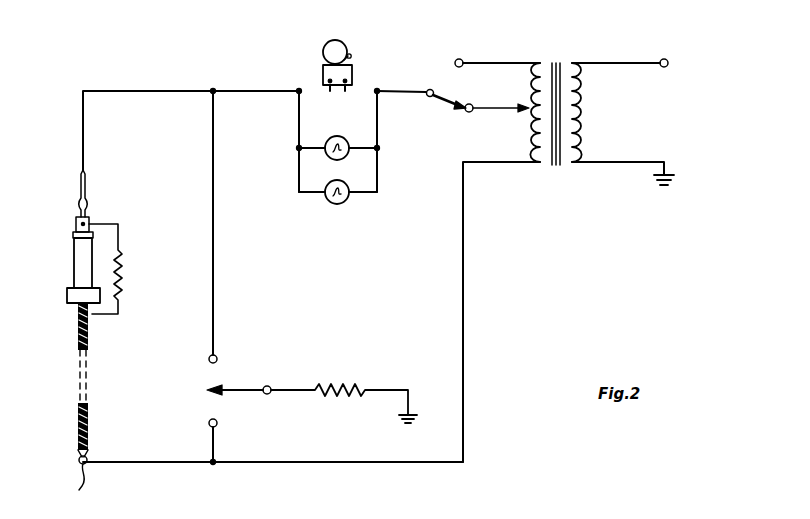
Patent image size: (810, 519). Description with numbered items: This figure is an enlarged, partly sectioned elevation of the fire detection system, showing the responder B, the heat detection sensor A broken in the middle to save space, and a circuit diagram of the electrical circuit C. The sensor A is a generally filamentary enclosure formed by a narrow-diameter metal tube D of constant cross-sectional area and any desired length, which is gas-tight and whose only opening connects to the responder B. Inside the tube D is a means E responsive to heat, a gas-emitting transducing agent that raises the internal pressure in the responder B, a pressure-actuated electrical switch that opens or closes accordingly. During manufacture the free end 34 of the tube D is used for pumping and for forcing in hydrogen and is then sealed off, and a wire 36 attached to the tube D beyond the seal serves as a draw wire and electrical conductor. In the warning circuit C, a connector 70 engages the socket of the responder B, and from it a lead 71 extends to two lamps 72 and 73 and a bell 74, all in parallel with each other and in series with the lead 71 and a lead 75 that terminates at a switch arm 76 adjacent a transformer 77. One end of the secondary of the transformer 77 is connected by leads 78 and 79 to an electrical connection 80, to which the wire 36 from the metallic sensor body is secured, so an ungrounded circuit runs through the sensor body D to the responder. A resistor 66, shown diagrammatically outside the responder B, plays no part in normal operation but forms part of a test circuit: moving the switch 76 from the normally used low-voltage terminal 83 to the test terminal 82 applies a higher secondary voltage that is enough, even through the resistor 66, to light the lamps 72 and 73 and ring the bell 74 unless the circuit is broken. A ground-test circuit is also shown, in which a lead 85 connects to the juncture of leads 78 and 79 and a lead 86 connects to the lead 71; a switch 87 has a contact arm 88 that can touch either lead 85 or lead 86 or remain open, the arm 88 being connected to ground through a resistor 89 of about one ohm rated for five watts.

The free end of tube 34 is at (76, 448).
The draw wire 36 is at (74, 460).
The resistor 66 is at (119, 258).
The connector 70 is at (76, 203).
The lead 71 is at (84, 143).
The lamp 72 is at (341, 203).
The lamp 73 is at (343, 157).
The bell 74 is at (343, 48).
The lead 75 is at (394, 91).
The switch arm 76 is at (452, 94).
The transformer 77 is at (557, 62).
The lead 78 is at (464, 358).
The lead 79 is at (136, 464).
The electrical connection 80 is at (70, 484).
The test terminal 82 is at (459, 58).
The terminal 83 is at (470, 113).
The lead 85 is at (215, 448).
The lead 86 is at (215, 253).
The switch 87 is at (270, 386).
The contact arm 88 is at (238, 390).
The resistor 89 is at (343, 382).
The sensor A is at (78, 347).
The responder B is at (71, 270).
The electrical circuit C is at (213, 89).
The tube D is at (76, 328).
The heat-responsive means E is at (92, 332).